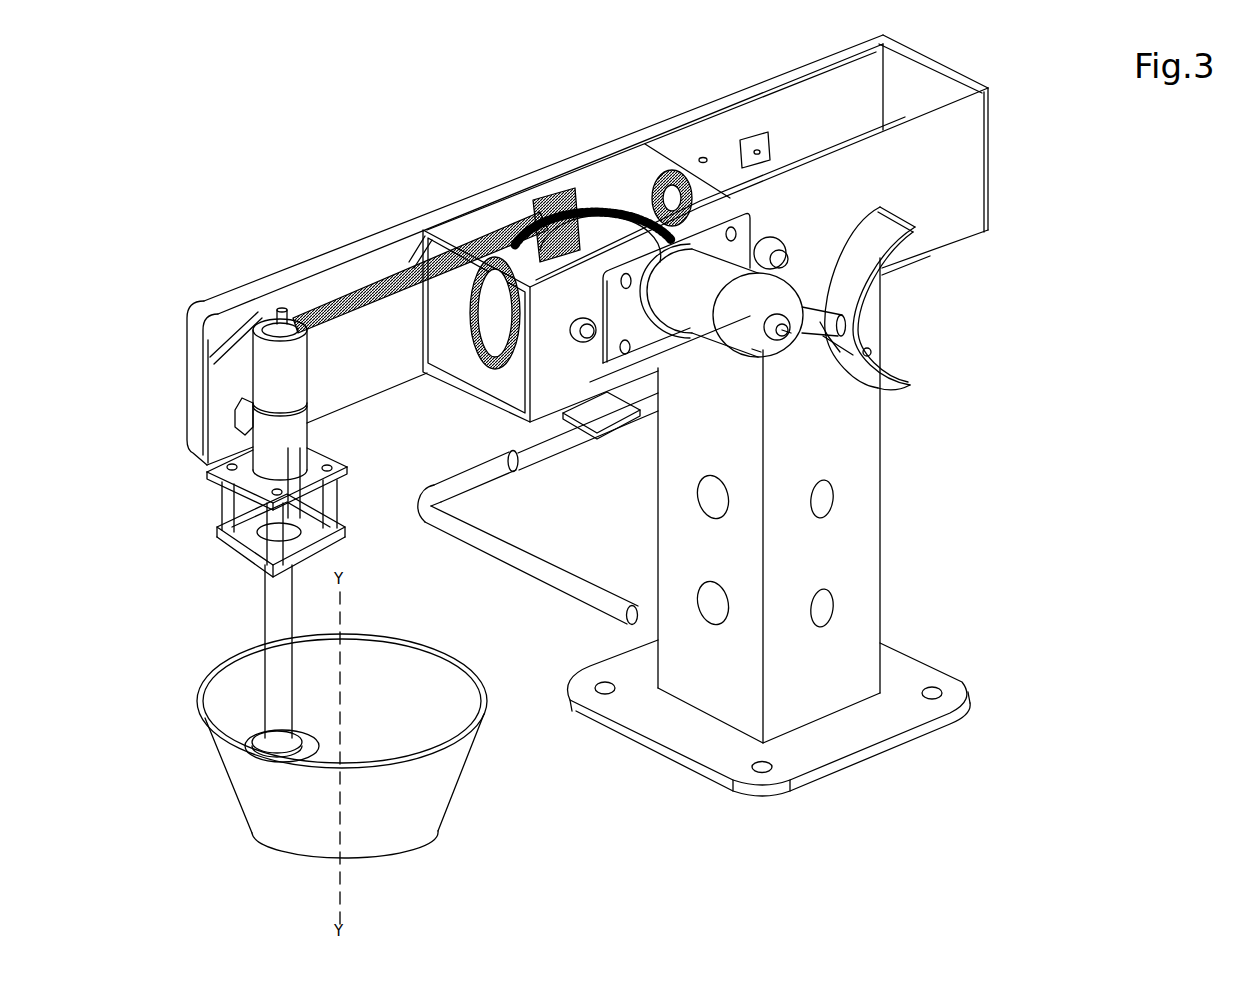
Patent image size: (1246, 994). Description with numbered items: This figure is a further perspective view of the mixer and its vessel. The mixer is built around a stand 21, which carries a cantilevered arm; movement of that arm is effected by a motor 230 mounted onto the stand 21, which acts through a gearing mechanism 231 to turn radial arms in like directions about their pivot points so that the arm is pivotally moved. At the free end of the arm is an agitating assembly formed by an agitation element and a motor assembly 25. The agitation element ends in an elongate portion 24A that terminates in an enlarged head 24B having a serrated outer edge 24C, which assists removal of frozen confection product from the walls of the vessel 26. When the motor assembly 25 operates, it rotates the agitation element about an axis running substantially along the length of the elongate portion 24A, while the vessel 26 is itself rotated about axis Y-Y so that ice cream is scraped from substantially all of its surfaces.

The stand 21 is at (722, 100).
The gearing mechanism 231 is at (660, 192).
The motor 230 is at (782, 350).
The motor assembly 25 is at (310, 413).
The elongate portion 24A is at (268, 627).
The enlarged head 24B is at (273, 745).
The serrated outer edge 24C is at (247, 735).
The vessel 26 is at (457, 778).